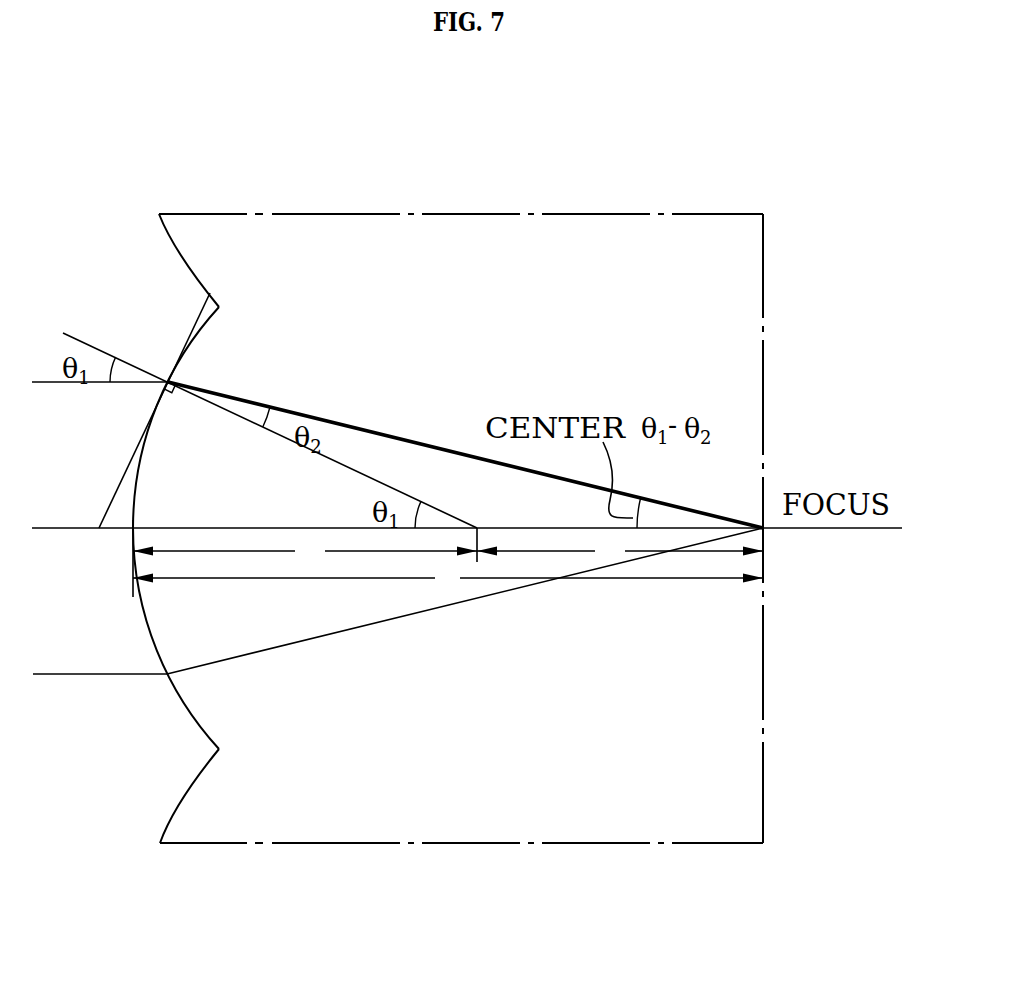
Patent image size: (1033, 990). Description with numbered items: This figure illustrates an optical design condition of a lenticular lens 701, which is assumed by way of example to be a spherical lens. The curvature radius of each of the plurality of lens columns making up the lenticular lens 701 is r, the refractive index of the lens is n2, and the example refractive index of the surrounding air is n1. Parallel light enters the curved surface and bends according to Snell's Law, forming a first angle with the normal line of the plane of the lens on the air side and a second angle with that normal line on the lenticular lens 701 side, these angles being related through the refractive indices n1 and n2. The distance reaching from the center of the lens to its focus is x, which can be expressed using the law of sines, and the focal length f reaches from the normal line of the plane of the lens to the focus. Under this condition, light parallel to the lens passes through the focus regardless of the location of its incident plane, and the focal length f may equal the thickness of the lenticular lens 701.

The lenticular lens 701 is at (596, 213).
The refractive index of air n1 is at (121, 483).
The refractive index of the lenticular lens n2 is at (465, 503).
The curvature radius r is at (270, 465).
The distance from center of the lens to focus x is at (620, 552).
The focal length f is at (448, 580).